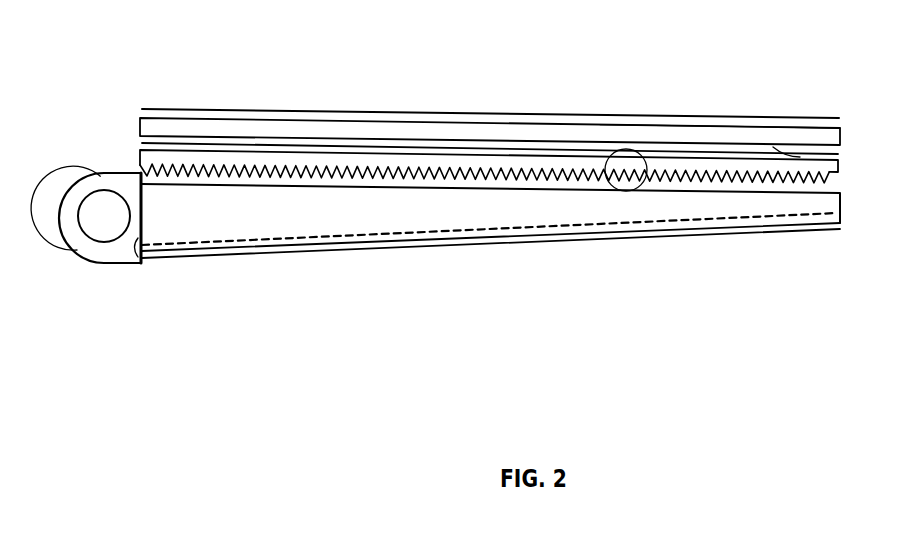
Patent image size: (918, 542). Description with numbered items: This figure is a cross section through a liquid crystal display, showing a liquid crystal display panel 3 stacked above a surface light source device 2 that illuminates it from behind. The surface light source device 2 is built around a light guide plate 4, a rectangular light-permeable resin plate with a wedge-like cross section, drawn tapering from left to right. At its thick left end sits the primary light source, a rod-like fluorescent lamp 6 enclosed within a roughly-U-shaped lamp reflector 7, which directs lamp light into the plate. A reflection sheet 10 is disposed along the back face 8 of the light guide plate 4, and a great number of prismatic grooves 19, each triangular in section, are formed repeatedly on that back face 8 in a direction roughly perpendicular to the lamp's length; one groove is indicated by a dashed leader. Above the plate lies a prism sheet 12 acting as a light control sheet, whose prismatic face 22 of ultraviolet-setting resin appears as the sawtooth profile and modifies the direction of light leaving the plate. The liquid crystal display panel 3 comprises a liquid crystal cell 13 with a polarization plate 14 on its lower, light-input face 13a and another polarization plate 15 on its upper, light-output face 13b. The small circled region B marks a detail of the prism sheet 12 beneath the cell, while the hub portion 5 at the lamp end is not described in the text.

The surface light source device 2 is at (78, 160).
The liquid crystal display panel 3 is at (185, 101).
The light guide plate 4 is at (540, 220).
The hinge hub 5 is at (128, 265).
The rod-like fluorescent lamp 6 is at (97, 237).
The roughly-U-shaped lamp reflector 7 is at (65, 198).
The back face 8 is at (287, 257).
The reflection sheet 10 is at (220, 255).
The prism sheet 12 is at (457, 165).
The liquid crystal cell 13 is at (337, 128).
The lower face 13a is at (797, 158).
The upper face 13b is at (693, 127).
The polarization plate 14 is at (425, 147).
The polarization plate 15 is at (273, 110).
The prismatic grooves 19 is at (761, 215).
The prismatic face 22 is at (410, 176).
The detail region B is at (620, 150).